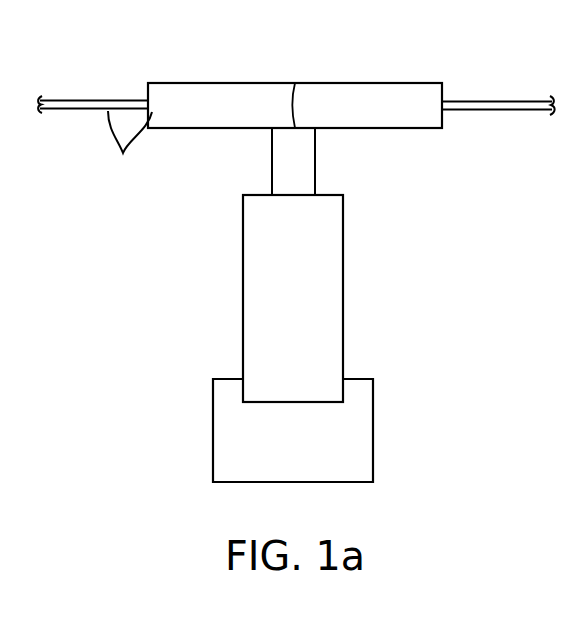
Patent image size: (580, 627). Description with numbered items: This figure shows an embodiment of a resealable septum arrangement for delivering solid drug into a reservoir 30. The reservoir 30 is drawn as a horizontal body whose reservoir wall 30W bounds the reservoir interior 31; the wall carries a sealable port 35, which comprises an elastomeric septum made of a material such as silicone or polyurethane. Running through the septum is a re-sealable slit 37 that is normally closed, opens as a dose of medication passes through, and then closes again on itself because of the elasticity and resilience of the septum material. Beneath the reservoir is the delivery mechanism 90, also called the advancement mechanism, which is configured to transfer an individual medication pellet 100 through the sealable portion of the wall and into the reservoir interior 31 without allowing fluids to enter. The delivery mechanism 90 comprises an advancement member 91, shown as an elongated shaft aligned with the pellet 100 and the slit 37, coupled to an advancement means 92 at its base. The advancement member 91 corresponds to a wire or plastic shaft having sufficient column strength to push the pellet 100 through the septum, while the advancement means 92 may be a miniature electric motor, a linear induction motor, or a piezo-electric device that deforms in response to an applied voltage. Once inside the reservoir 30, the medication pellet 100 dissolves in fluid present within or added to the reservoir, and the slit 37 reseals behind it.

The reservoir 30 is at (92, 100).
The reservoir wall 30W is at (124, 148).
The reservoir interior 31 is at (215, 72).
The sealable port 35 is at (372, 97).
The re-sealable slit 37 is at (295, 83).
The delivery mechanism 90 is at (343, 302).
The advancement member 91 is at (311, 308).
The advancement means 92 is at (311, 456).
The medication pellet 100 is at (308, 155).